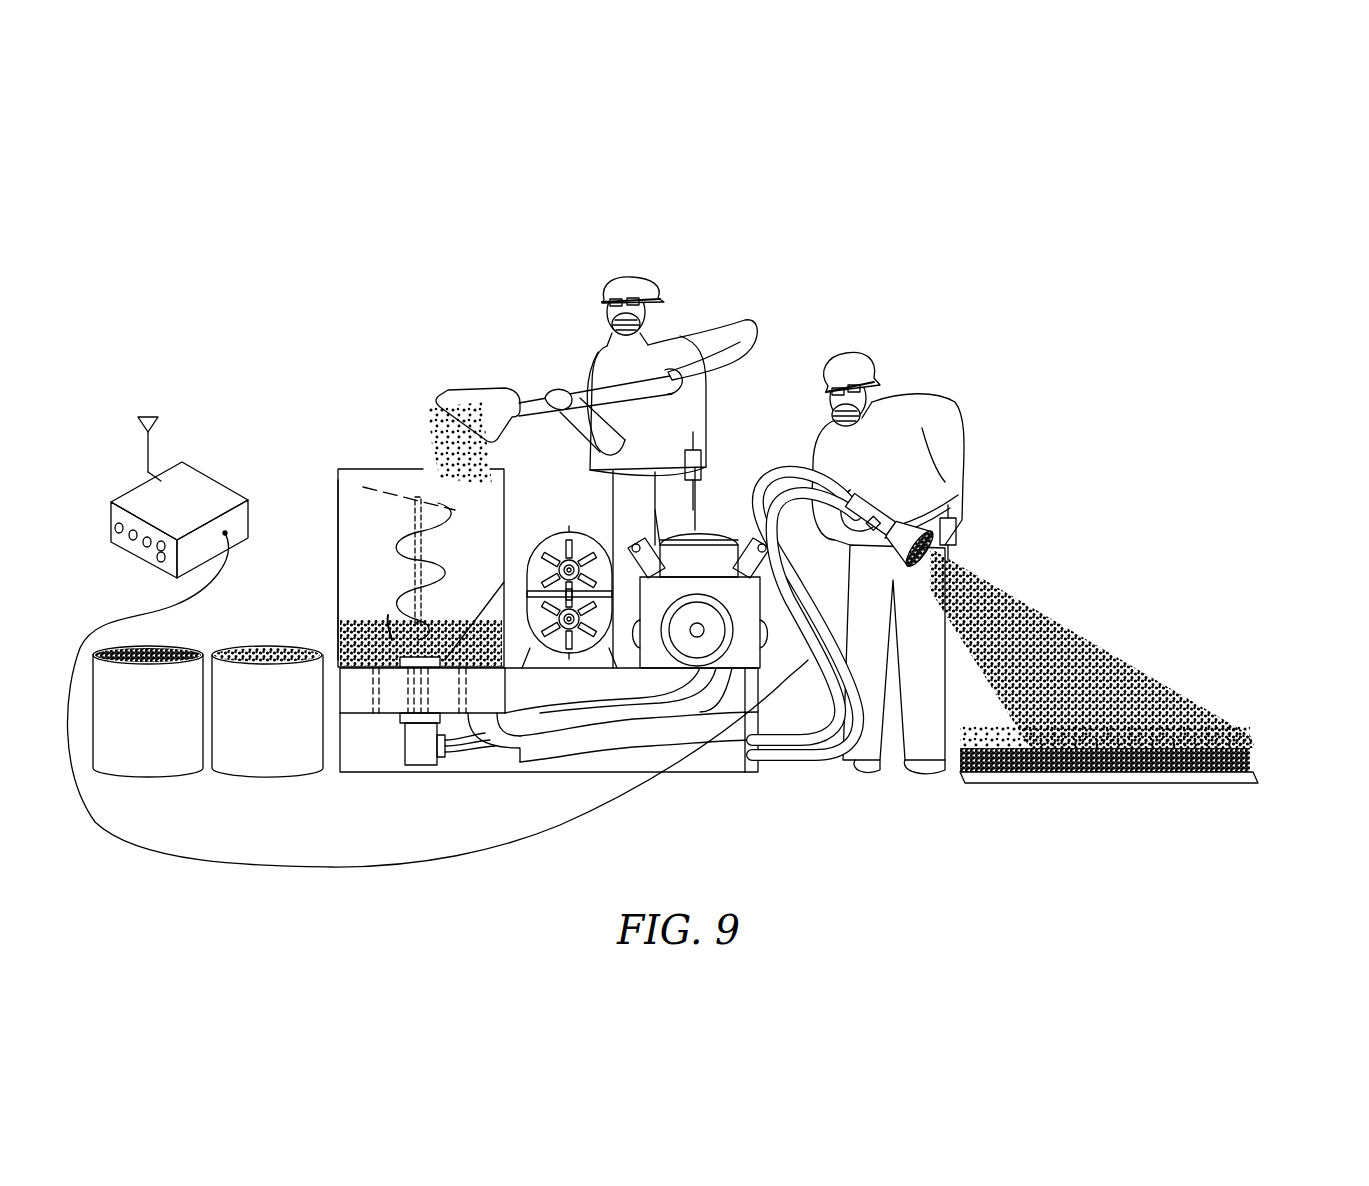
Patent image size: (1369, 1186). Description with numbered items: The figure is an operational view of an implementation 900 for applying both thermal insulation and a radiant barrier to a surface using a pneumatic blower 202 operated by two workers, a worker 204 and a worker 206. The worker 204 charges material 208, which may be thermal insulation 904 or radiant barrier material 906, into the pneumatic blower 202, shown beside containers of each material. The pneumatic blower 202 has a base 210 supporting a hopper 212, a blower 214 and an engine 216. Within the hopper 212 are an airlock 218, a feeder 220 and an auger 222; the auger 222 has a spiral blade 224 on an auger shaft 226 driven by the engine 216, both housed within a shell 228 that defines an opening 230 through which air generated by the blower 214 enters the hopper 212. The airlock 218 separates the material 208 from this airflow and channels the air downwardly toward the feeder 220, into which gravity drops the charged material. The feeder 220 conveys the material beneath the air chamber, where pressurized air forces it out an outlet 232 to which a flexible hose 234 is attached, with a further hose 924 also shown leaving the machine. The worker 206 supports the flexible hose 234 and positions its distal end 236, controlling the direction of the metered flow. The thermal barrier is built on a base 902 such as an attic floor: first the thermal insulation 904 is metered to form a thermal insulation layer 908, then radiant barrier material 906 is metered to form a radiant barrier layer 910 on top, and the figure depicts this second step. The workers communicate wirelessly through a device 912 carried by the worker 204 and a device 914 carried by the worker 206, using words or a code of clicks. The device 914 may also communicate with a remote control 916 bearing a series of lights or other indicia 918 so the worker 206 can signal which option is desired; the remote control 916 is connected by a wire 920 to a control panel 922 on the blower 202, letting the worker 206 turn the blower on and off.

The pneumatic blower 202 is at (537, 765).
The worker 204 is at (653, 278).
The worker 206 is at (858, 350).
The material 208 is at (435, 422).
The base 210 is at (334, 790).
The hopper 212 is at (328, 460).
The blower 214 is at (564, 570).
The engine 216 is at (768, 640).
The airlock 218 is at (490, 582).
The feeder 220 is at (372, 622).
The auger 222 is at (390, 558).
The spiral blade 224 is at (370, 488).
The auger shaft 226 is at (414, 505).
The shell 228 is at (337, 546).
The opening 230 is at (512, 570).
The outlet 232 is at (503, 765).
The flexible hose 234 is at (768, 770).
The distal end 236 is at (895, 562).
The implementation 900 is at (1030, 320).
The base 902 is at (1170, 782).
The thermal insulation 904 is at (124, 648).
The radiant barrier material 906 is at (270, 648).
The thermal insulation layer 908 is at (1243, 762).
The radiant barrier layer 910 is at (1240, 740).
The device 912 is at (703, 463).
The device 914 is at (958, 529).
The remote control 916 is at (197, 470).
The lights or other indicia 918 is at (158, 560).
The wire 920 is at (557, 832).
The control panel 922 is at (832, 718).
The delivery hose 924 is at (775, 768).